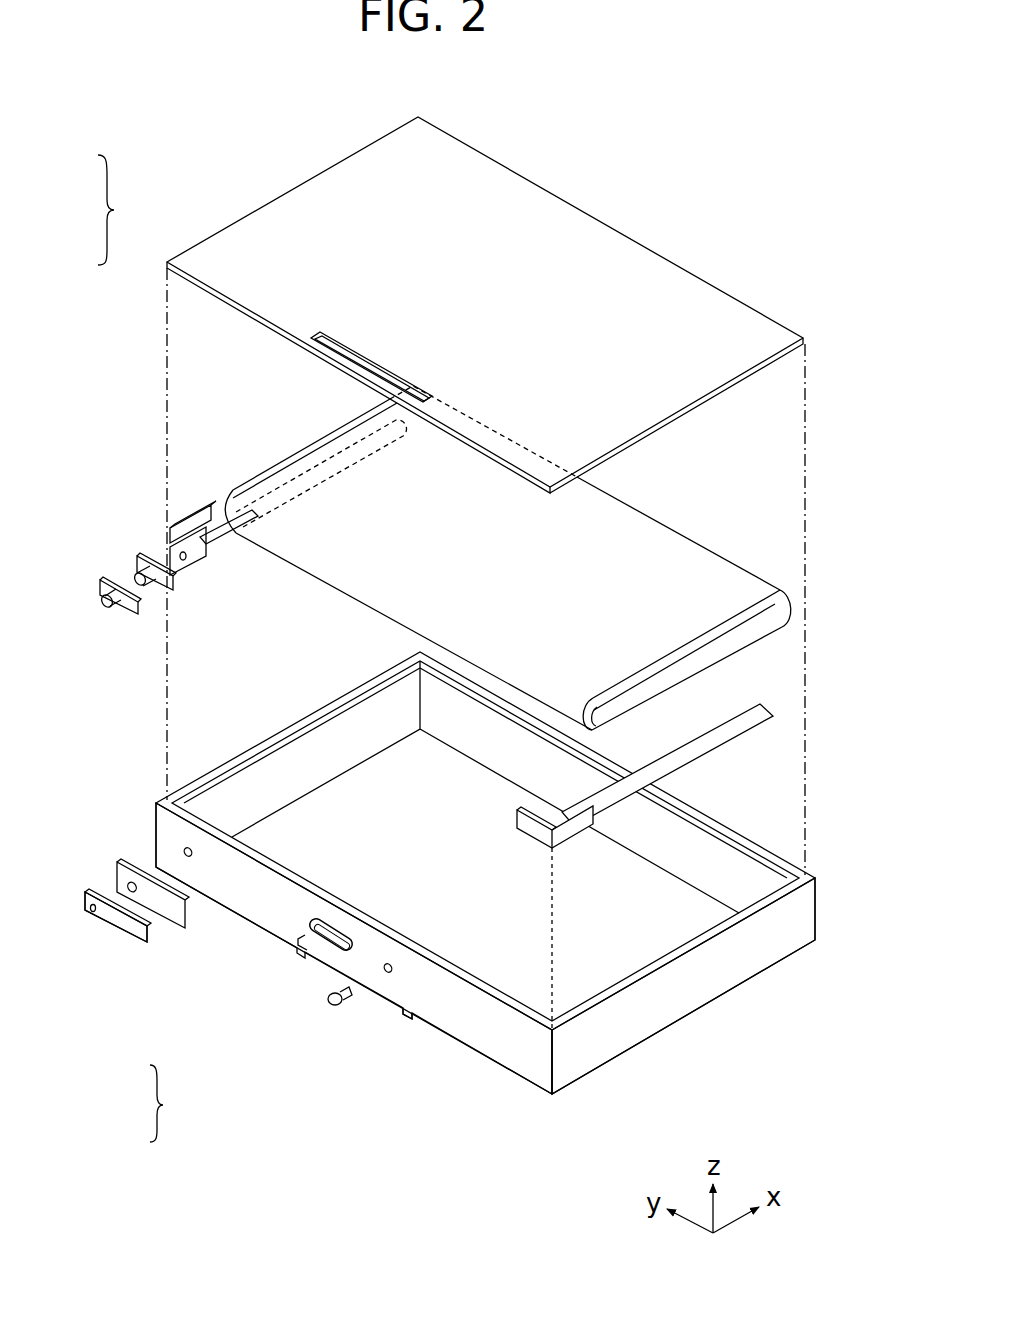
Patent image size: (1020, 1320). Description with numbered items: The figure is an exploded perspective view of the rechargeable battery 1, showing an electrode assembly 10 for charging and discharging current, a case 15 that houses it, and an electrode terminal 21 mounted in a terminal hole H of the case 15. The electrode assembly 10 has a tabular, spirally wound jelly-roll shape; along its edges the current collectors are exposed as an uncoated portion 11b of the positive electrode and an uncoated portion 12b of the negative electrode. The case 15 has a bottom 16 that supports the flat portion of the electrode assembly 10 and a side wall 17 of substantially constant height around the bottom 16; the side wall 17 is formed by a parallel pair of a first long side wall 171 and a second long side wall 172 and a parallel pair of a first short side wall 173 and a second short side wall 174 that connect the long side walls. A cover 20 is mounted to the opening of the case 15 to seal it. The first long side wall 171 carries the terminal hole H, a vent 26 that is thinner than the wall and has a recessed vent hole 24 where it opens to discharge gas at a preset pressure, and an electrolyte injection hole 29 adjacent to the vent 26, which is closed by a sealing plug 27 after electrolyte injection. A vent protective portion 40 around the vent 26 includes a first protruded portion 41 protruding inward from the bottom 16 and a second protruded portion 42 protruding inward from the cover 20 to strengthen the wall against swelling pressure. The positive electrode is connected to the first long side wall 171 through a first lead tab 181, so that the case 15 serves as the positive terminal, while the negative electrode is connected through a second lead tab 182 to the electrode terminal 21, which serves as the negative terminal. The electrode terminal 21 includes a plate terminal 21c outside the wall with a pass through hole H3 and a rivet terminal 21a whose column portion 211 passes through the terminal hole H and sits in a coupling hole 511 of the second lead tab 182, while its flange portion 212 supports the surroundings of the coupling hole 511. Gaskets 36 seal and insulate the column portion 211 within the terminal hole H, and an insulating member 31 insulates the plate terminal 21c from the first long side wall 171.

The rechargeable battery 1 is at (273, 114).
The electrode assembly 10 is at (679, 519).
The uncoated portion 11b is at (728, 648).
The uncoated portion 12b is at (325, 446).
The case 15 is at (693, 1017).
The bottom 16 is at (604, 962).
The side wall 17 is at (117, 210).
The first long side wall 171 is at (252, 906).
The second long side wall 172 is at (712, 824).
The first short side wall 173 is at (750, 961).
The second short side wall 174 is at (342, 703).
The first lead tab 181 is at (580, 830).
The second lead tab 182 is at (192, 533).
The cover 20 is at (596, 255).
The electrode terminal 21 is at (115, 954).
The rivet terminal 21a is at (127, 554).
The plate terminal 21c is at (91, 906).
The column portion 211 is at (147, 592).
The flange portion 212 is at (178, 590).
The vent hole 24 is at (337, 945).
The vent 26 is at (312, 921).
The sealing plug 27 is at (329, 1000).
The electrolyte injection hole 29 is at (387, 975).
The insulating member 31 is at (130, 875).
The gasket 36 is at (94, 603).
The vent protective portion 40 is at (171, 1103).
The first protruded portion 41 is at (408, 1013).
The second protruded portion 42 is at (335, 333).
The coupling hole 511 is at (188, 562).
The terminal hole H is at (184, 853).
The pass through hole H3 is at (91, 913).